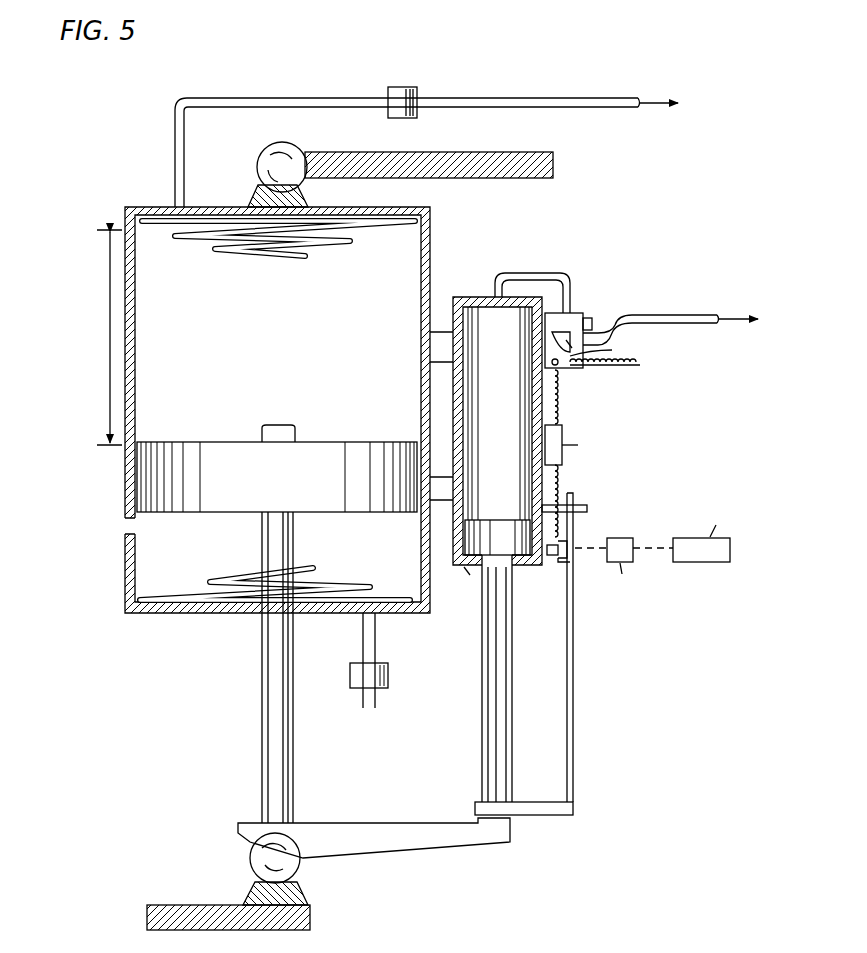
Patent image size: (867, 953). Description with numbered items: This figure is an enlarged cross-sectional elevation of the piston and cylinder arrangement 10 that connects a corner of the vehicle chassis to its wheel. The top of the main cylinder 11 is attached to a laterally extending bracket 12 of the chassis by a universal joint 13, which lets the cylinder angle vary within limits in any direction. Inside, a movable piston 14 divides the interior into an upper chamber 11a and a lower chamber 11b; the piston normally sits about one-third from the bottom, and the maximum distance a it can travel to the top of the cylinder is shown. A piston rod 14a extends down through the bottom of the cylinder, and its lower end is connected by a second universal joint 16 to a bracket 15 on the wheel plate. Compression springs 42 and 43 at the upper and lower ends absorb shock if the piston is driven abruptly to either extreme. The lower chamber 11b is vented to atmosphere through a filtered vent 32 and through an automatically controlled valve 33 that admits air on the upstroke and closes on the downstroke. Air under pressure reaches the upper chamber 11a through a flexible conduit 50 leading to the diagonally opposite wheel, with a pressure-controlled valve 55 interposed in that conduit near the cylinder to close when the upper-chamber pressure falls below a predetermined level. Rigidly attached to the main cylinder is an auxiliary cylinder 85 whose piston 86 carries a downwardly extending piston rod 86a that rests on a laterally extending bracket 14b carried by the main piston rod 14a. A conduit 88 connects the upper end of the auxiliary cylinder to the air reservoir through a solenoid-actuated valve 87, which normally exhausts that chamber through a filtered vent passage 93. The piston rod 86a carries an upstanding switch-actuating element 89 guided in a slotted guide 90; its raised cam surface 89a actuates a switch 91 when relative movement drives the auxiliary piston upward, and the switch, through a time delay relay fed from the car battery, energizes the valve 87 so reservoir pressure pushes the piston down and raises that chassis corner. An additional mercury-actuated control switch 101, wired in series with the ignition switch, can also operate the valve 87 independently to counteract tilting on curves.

The piston and cylinder arrangement 10 is at (125, 280).
The maximum piston travel distance a is at (110, 334).
The cylinder 11 is at (126, 370).
The upper chamber 11a is at (292, 362).
The lower chamber 11b is at (378, 547).
The laterally extending bracket 12 is at (358, 154).
The universal joint 13 is at (264, 150).
The piston 14 is at (190, 442).
The piston rod 14a is at (262, 676).
The laterally extending bracket 14b is at (428, 840).
The bracket 15 is at (166, 905).
The universal joint 16 is at (300, 868).
The vent 32 is at (126, 526).
The automatically controlled valve 33 is at (388, 672).
The compression spring 42 is at (228, 256).
The compression spring 43 is at (212, 582).
The flexible conduit 50 is at (292, 98).
The pressure-controlled valve 55 is at (405, 90).
The auxiliary cylinder 85 is at (540, 416).
The piston 86 is at (497, 520).
The piston rod 86a is at (482, 690).
The solenoid-actuated valve 87 is at (575, 312).
The conduit 88 is at (540, 273).
The switch-actuating element 89 is at (574, 630).
The raised cam surface 89a is at (562, 563).
The guide 90 is at (588, 510).
The switch 91 is at (566, 547).
The vent passage 93 is at (592, 322).
The mercury-actuated control switch 101 is at (612, 350).